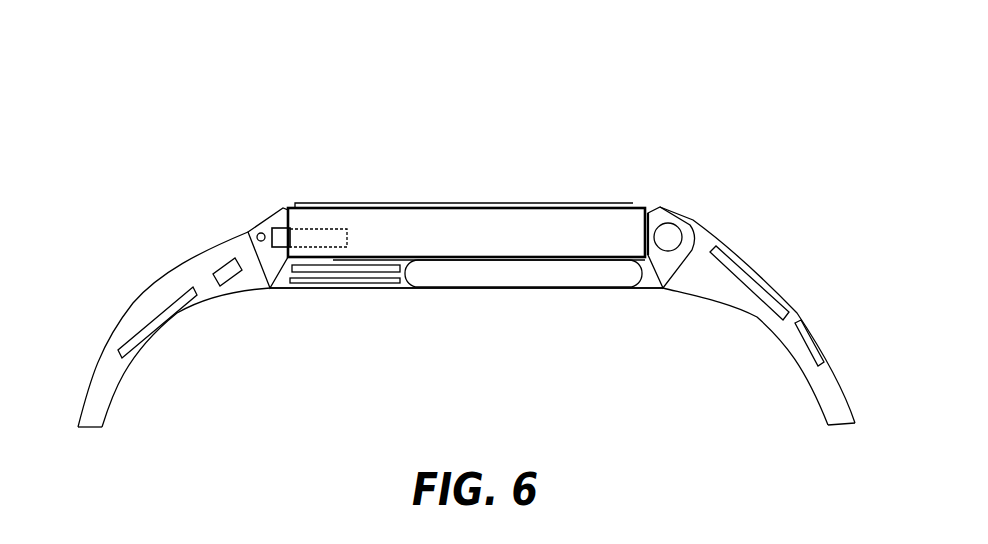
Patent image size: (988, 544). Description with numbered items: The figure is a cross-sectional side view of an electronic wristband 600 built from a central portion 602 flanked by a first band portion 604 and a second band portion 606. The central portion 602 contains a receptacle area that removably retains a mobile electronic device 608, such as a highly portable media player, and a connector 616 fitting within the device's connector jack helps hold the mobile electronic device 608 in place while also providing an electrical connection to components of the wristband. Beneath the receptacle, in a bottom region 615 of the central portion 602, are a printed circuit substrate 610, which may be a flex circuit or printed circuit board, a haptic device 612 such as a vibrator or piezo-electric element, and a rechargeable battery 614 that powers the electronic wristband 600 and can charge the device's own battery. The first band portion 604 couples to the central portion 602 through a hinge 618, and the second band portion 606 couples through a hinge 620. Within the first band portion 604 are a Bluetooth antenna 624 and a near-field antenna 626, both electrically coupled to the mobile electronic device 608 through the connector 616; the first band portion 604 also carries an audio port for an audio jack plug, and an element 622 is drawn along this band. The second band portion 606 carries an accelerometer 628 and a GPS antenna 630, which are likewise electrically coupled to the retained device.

The electronic wristband 600 is at (388, 91).
The central portion 602 is at (466, 175).
The first band portion 604 is at (835, 398).
The second band portion 606 is at (85, 393).
The mobile electronic device 608 is at (536, 246).
The printed circuit substrate 610 is at (340, 267).
The haptic device 612 is at (387, 283).
The battery 614 is at (583, 273).
The bottom region 615 is at (502, 288).
The connector 616 is at (283, 230).
The hinge 618 is at (662, 212).
The hinge 620 is at (263, 222).
The right band slot 622 is at (740, 273).
The Bluetooth antenna 624 is at (810, 331).
The near-field antenna 626 is at (672, 237).
The accelerometer 628 is at (222, 266).
The GPS antenna 630 is at (138, 325).